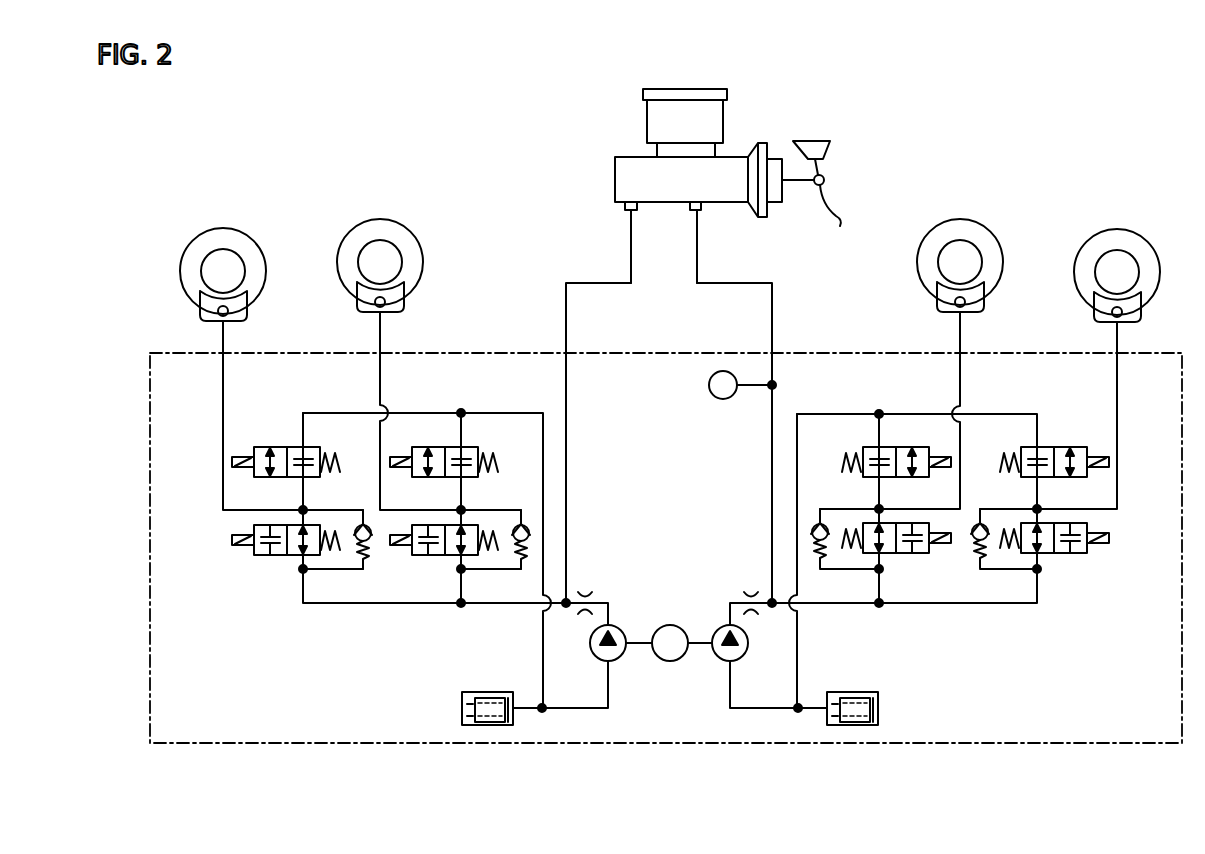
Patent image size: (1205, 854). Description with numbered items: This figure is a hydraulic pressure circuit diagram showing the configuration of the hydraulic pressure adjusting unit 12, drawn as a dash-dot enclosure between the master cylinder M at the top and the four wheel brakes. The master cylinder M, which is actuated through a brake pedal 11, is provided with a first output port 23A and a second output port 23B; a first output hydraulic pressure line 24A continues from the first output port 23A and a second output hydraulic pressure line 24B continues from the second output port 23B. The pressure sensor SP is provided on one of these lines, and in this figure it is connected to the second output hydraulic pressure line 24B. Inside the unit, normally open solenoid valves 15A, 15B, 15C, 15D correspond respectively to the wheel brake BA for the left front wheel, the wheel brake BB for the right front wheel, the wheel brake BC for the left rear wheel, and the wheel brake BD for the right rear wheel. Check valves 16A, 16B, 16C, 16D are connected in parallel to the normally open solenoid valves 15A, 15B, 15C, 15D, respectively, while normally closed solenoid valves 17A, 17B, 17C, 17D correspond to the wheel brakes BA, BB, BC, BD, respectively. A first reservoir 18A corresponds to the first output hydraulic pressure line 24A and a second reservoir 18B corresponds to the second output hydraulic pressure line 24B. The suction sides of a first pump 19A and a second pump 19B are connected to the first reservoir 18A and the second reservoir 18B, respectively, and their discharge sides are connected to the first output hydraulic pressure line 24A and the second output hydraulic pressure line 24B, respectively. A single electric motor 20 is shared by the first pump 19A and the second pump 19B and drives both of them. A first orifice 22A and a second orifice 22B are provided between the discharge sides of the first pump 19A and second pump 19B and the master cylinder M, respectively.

The wheel brake BA is at (210, 226).
The wheel brake BD is at (386, 218).
The wheel brake BC is at (962, 217).
The wheel brake BB is at (1110, 227).
The master cylinder M is at (628, 180).
The brake pedal 11 is at (837, 200).
The hydraulic pressure adjusting unit 12 is at (424, 353).
The first output port 23A is at (623, 210).
The second output port 23B is at (698, 208).
The first output hydraulic pressure line 24A is at (563, 323).
The second output hydraulic pressure line 24B is at (775, 321).
The pressure sensor SP is at (720, 398).
The normally closed solenoid valve 17A is at (267, 447).
The normally closed solenoid valve 17D is at (467, 447).
The normally closed solenoid valve 17C is at (890, 447).
The normally closed solenoid valve 17B is at (1063, 447).
The normally open solenoid valve 15A is at (280, 555).
The normally open solenoid valve 15D is at (438, 555).
The normally open solenoid valve 15C is at (905, 553).
The normally open solenoid valve 15B is at (1063, 553).
The check valve 16A is at (369, 547).
The check valve 16D is at (527, 547).
The check valve 16C is at (810, 546).
The check valve 16B is at (970, 546).
The first pump 19A is at (620, 626).
The second pump 19B is at (714, 630).
The electric motor 20 is at (668, 661).
The first orifice 22A is at (587, 611).
The second orifice 22B is at (753, 611).
The first reservoir 18A is at (495, 690).
The second reservoir 18B is at (855, 688).